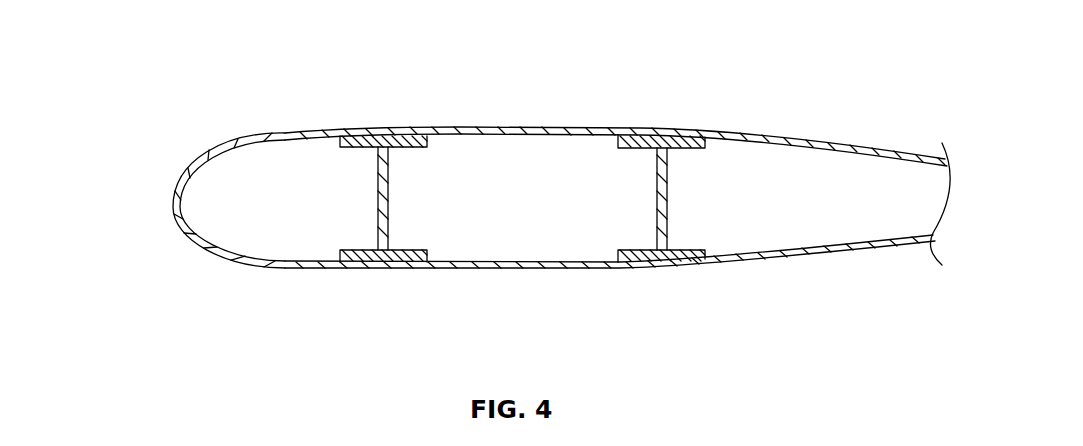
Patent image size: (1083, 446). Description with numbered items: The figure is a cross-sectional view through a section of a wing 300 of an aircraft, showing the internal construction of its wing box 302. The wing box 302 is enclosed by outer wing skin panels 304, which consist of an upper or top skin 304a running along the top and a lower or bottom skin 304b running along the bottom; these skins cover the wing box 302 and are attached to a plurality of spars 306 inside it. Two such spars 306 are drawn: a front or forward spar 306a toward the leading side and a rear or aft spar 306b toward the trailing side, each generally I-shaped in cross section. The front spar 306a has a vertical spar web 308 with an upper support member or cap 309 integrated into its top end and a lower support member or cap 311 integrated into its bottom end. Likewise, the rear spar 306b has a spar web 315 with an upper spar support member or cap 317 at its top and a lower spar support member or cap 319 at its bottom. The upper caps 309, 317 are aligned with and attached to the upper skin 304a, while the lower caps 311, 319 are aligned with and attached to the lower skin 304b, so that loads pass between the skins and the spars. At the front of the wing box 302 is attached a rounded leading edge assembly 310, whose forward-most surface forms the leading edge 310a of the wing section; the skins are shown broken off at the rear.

The wing 300 is at (530, 100).
The wing box 302 is at (518, 292).
The outer wing skin panels 304 is at (820, 130).
The upper skin 304a is at (732, 130).
The lower skin 304b is at (728, 267).
The spars 306 is at (412, 190).
The front spar 306a is at (363, 228).
The rear spar 306b is at (682, 218).
The spar web 308 is at (378, 208).
The upper support member or cap 309 is at (412, 140).
The lower support member or cap 311 is at (423, 252).
The spar web 315 is at (667, 198).
The upper spar support member or cap 317 is at (636, 140).
The lower spar support member or cap 319 is at (625, 252).
The leading edge assembly 310 is at (205, 268).
The leading edge 310a is at (178, 218).